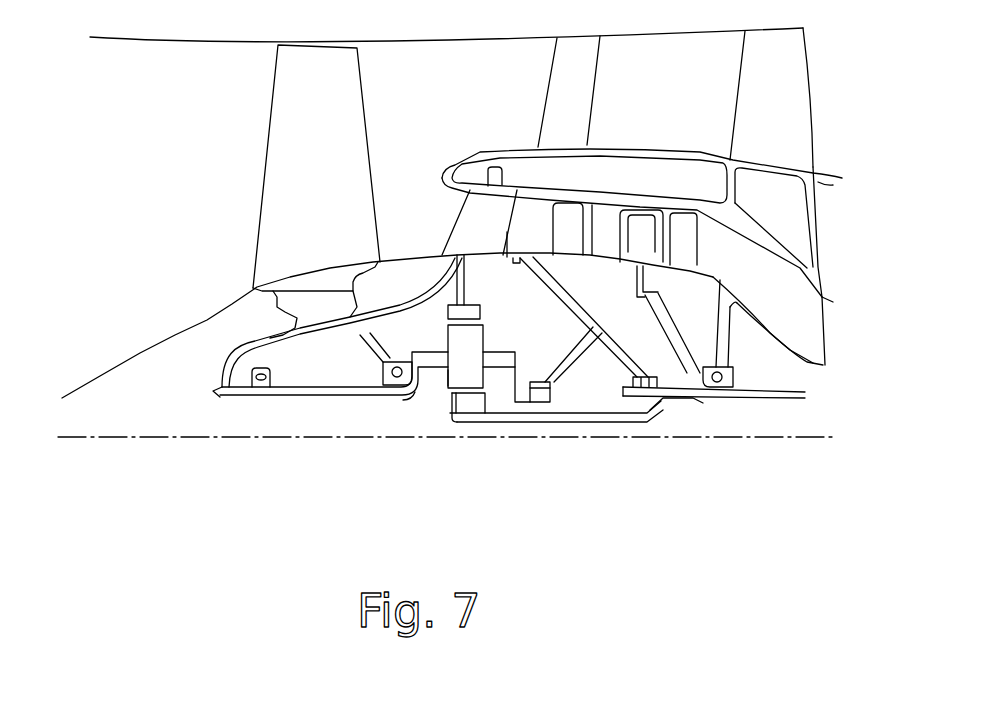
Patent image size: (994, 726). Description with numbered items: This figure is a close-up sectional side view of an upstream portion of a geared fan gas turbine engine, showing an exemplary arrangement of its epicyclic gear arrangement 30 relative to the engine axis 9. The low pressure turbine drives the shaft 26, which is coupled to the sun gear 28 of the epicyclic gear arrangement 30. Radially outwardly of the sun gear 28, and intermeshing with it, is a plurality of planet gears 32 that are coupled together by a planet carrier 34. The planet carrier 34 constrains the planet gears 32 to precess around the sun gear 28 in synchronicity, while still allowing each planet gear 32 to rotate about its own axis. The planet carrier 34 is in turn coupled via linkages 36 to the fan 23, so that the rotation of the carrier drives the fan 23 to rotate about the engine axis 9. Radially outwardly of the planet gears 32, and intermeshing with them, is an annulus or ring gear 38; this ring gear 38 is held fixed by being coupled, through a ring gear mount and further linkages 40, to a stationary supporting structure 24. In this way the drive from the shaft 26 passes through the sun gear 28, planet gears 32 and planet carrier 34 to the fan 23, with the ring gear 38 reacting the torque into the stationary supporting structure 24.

The engine axis 9 is at (243, 440).
The fan 23 is at (282, 168).
The stationary supporting structure 24 is at (473, 218).
The shaft 26 is at (707, 398).
The sun gear 28 is at (467, 407).
The epicyclic gear arrangement 30 is at (421, 375).
The planet gears 32 is at (453, 377).
The planet carrier 34 is at (502, 392).
The linkages 36 is at (412, 400).
The ring gear 38 is at (447, 315).
The linkages 40 is at (470, 290).